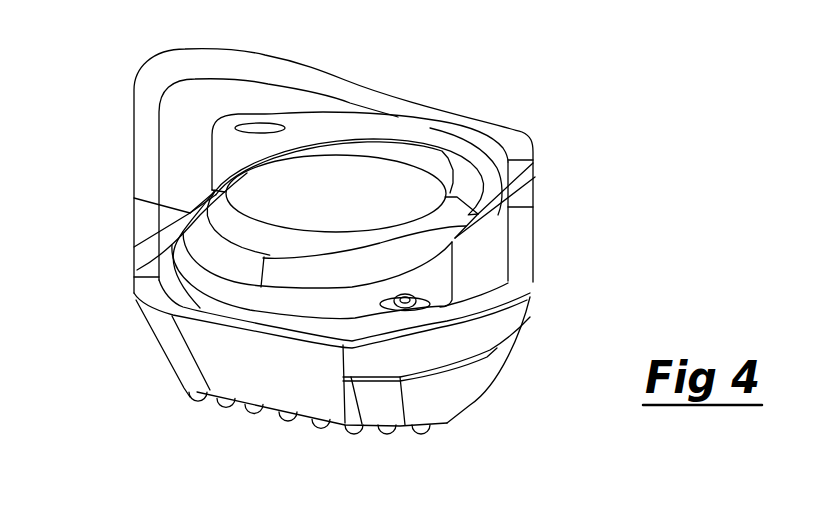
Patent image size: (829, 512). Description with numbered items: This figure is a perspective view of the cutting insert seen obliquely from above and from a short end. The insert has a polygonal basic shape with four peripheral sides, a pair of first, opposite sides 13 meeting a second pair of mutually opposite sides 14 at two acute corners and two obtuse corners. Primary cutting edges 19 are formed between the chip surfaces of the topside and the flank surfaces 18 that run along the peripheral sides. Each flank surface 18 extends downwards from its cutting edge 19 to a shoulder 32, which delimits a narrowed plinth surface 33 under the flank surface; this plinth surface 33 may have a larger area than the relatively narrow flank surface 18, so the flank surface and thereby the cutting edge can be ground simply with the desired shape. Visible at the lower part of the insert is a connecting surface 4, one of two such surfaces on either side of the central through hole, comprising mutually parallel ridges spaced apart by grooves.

The connecting surface 4 is at (253, 420).
The first peripheral side 13 is at (120, 198).
The second peripheral side 14 is at (382, 82).
The flank surface 18 is at (480, 337).
The primary cutting edge 19 is at (497, 312).
The shoulder 32 is at (406, 430).
The plinth surface 33 is at (436, 366).